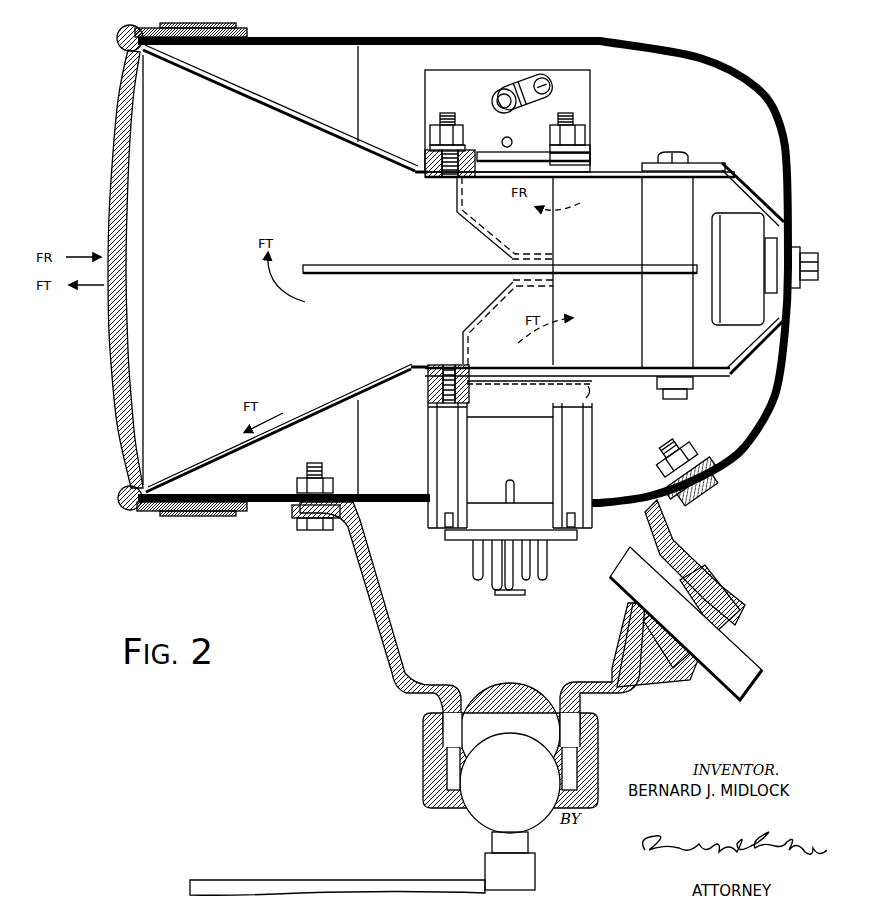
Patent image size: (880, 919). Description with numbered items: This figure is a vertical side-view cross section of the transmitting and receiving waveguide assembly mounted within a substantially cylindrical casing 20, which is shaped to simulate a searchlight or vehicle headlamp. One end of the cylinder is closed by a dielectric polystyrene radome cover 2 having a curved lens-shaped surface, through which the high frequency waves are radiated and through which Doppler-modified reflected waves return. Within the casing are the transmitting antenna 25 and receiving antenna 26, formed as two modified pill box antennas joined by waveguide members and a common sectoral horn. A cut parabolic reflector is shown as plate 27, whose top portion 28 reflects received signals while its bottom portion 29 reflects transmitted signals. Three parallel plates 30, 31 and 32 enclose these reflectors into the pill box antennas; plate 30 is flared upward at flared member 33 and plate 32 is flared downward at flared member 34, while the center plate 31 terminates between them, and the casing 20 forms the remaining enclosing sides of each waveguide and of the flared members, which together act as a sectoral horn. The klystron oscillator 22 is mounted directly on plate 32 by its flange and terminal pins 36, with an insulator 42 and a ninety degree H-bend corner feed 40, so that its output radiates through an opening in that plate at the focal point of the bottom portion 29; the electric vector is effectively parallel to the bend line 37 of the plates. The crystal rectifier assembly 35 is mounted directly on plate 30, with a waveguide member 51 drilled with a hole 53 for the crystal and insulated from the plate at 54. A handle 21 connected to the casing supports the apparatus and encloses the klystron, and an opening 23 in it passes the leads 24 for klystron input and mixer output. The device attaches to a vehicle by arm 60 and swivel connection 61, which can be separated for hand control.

The radome cover 2 is at (114, 149).
The cylindrical casing 20 is at (528, 38).
The handle 21 is at (384, 645).
The klystron oscillator 22 is at (593, 472).
The opening 23 is at (631, 610).
The leads 24 is at (744, 654).
The transmitting antenna 25 is at (608, 329).
The receiving antenna 26 is at (605, 241).
The plate 27 is at (682, 146).
The top portion 28 is at (694, 213).
The bottom portion 29 is at (695, 363).
The plate 30 is at (605, 172).
The center plate 31 is at (577, 274).
The plate 32 is at (605, 371).
The flared member 33 is at (301, 130).
The flared member 34 is at (332, 398).
The crystal rectifier assembly 35 is at (496, 63).
The terminal pins 36 is at (428, 394).
The bend line 37 is at (432, 179).
The corner feed 40 is at (469, 322).
The insulator 42 is at (591, 392).
The waveguide member 51 is at (590, 87).
The hole 53 is at (512, 92).
The insulation 54 is at (582, 157).
The arm 60 is at (287, 880).
The swivel connection 61 is at (462, 816).